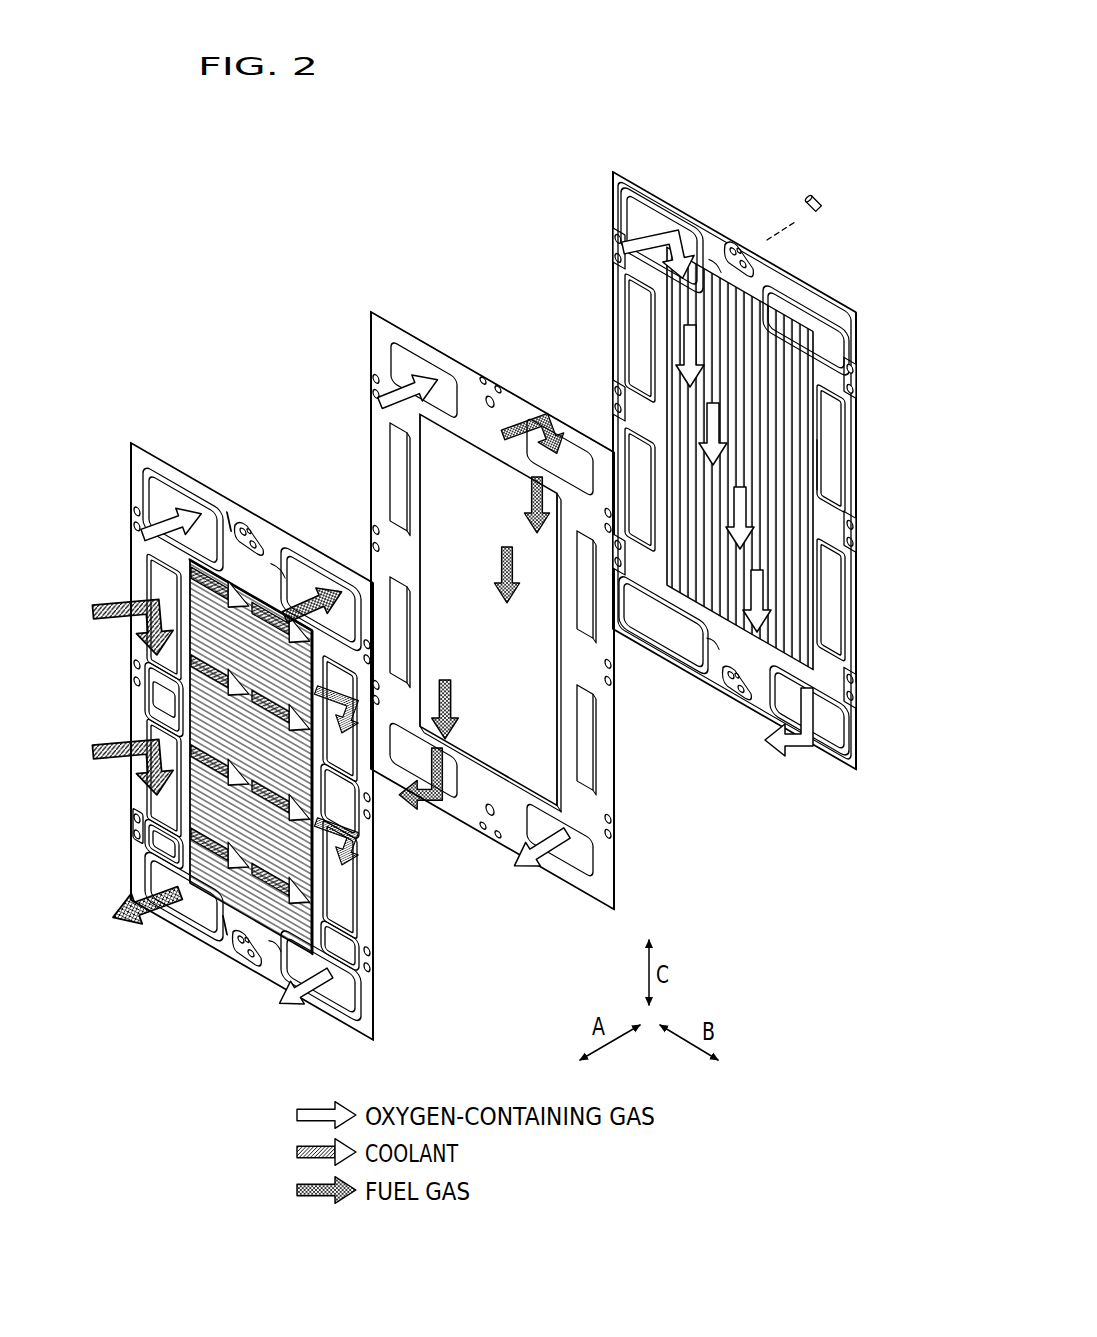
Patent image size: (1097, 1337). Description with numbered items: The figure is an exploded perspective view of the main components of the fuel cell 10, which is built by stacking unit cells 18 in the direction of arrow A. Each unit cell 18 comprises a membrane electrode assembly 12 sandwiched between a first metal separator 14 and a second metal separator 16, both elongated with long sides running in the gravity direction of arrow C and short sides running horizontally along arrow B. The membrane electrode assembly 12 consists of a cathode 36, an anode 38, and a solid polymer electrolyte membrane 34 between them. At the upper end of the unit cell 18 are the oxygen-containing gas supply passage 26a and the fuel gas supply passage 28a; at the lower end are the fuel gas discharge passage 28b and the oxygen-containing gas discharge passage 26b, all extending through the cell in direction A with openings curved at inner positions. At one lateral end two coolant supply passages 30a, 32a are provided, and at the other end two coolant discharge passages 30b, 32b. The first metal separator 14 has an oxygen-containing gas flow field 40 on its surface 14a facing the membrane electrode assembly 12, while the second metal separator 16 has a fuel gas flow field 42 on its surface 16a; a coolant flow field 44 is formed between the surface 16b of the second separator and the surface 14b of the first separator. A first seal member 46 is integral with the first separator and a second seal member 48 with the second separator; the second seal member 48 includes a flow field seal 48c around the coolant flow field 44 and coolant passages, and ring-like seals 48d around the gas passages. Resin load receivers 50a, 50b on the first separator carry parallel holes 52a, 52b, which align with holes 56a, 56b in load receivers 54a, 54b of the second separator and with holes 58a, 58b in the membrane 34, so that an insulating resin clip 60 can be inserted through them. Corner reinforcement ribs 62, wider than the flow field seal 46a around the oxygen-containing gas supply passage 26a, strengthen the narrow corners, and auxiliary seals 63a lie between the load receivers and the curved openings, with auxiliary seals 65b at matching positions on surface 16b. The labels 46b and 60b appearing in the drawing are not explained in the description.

The fuel cell 10 is at (355, 176).
The unit cell 18 is at (313, 176).
The membrane electrode assembly 12 is at (368, 310).
The first metal separator 14 is at (610, 169).
The surface of first metal separator 14a is at (852, 612).
The surface of first metal separator 14b is at (845, 628).
The second metal separator 16 is at (128, 443).
The surface of second metal separator 16a is at (372, 945).
The surface of second metal separator 16b is at (372, 918).
The oxygen-containing gas supply passage 26a is at (150, 502).
The oxygen-containing gas discharge passage 26b is at (332, 990).
The fuel gas supply passage 28a is at (320, 580).
The fuel gas discharge passage 28b is at (182, 905).
The coolant supply passage 30a is at (133, 603).
The coolant discharge passage 30b is at (378, 820).
The coolant supply passage 32a is at (148, 722).
The coolant discharge passage 32b is at (372, 880).
The solid polymer electrolyte membrane 34 is at (562, 760).
The cathode 36 is at (560, 790).
The anode 38 is at (540, 710).
The oxygen-containing gas flow field 40 is at (722, 366).
The fuel gas flow field 42 is at (148, 690).
The coolant flow field 44 is at (150, 788).
The first seal member 46 is at (800, 278).
The flow field seal 46a is at (700, 370).
The buffer 46b is at (852, 328).
The second seal member 48 is at (188, 490).
The flow field seal 48c is at (262, 565).
The ring-like seals 48d is at (370, 1002).
The load receiver 50a is at (732, 233).
The load receiver 50b is at (866, 530).
The hole 52a is at (852, 375).
The hole 52b is at (852, 388).
The load receiver 54a is at (262, 512).
The load receiver 54b is at (130, 828).
The hole 56a is at (370, 655).
The hole 56b is at (370, 670).
The hole 58a is at (484, 375).
The hole 58b is at (500, 385).
The insulating resin clip 60 is at (808, 210).
The bead seal 60b is at (848, 455).
The corner reinforcement ribs 62 is at (690, 215).
The auxiliary seals 63a is at (757, 248).
The auxiliary seals 65b is at (225, 520).